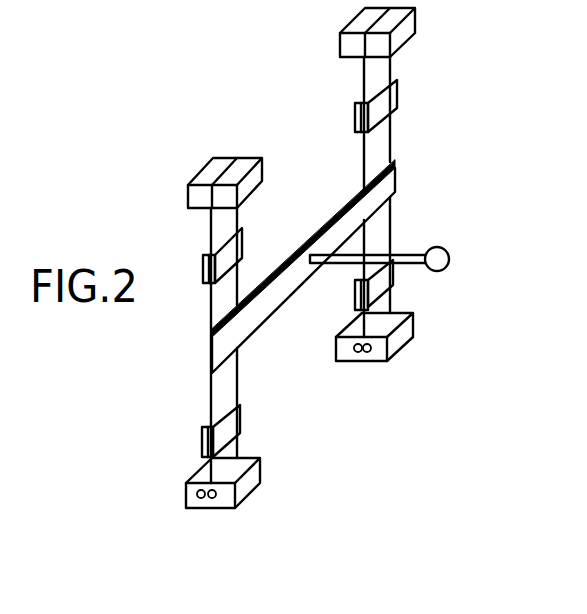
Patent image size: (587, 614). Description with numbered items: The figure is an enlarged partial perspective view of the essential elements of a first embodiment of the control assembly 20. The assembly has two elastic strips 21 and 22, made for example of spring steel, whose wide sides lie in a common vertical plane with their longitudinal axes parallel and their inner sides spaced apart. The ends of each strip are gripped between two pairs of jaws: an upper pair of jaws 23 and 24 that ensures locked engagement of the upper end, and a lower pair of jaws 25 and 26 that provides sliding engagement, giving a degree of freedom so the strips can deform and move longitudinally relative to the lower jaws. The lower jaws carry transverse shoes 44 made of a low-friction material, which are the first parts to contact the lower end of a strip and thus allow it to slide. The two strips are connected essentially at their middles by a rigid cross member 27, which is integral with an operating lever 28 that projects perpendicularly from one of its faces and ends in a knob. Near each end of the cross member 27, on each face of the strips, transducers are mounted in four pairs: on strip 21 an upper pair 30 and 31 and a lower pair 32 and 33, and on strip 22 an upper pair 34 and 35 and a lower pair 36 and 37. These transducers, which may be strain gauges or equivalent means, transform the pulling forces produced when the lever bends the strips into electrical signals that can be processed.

The control assembly 20 is at (432, 147).
The elastic strip 21 is at (380, 137).
The elastic strip 22 is at (213, 231).
The upper jaw 23 is at (338, 43).
The upper jaw 24 is at (403, 37).
The lower jaw 25 is at (338, 347).
The lower jaw 26 is at (400, 337).
The rigid cross member 27 is at (333, 228).
The operating lever 28 is at (421, 248).
The transducer 30 is at (355, 107).
The transducer 31 is at (392, 100).
The transducer 32 is at (355, 297).
The transducer 33 is at (383, 281).
The transducer 34 is at (206, 282).
The transducer 35 is at (240, 241).
The transducer 36 is at (202, 437).
The transducer 37 is at (243, 420).
The transverse shoe 44 is at (367, 354).